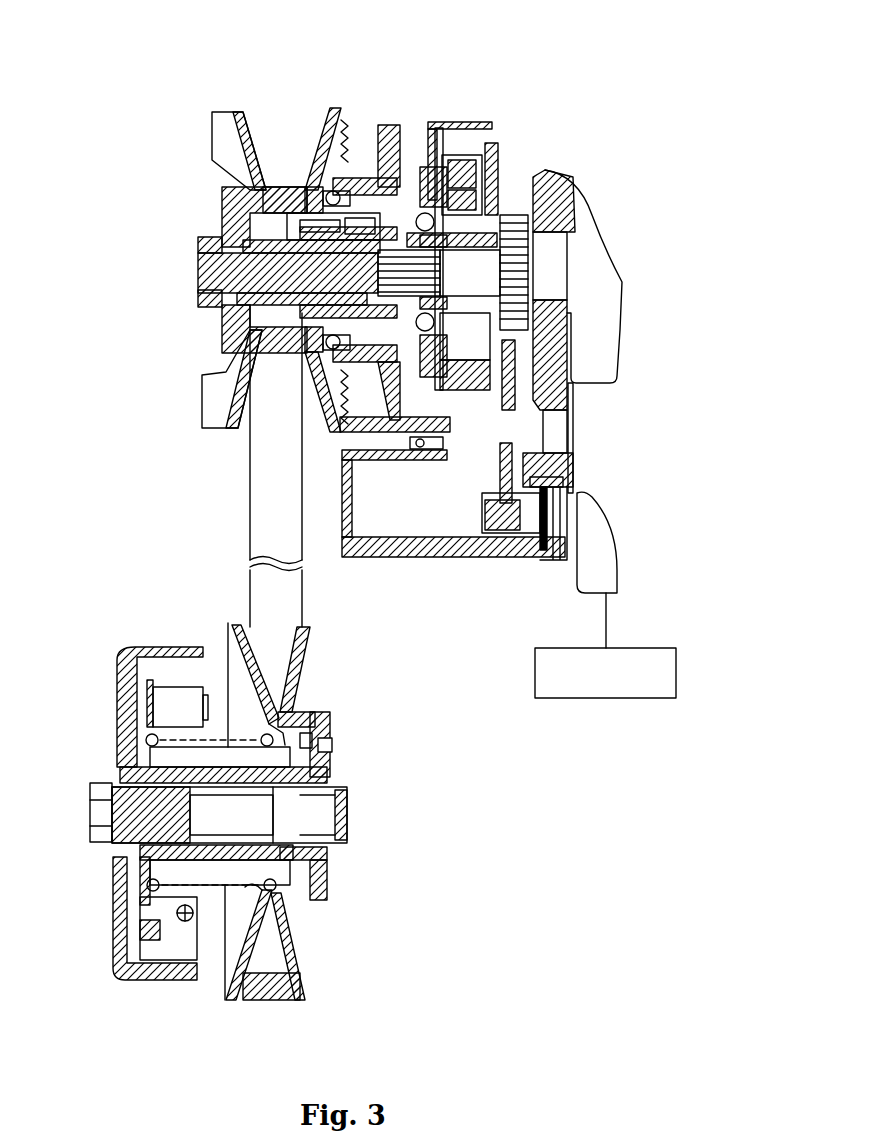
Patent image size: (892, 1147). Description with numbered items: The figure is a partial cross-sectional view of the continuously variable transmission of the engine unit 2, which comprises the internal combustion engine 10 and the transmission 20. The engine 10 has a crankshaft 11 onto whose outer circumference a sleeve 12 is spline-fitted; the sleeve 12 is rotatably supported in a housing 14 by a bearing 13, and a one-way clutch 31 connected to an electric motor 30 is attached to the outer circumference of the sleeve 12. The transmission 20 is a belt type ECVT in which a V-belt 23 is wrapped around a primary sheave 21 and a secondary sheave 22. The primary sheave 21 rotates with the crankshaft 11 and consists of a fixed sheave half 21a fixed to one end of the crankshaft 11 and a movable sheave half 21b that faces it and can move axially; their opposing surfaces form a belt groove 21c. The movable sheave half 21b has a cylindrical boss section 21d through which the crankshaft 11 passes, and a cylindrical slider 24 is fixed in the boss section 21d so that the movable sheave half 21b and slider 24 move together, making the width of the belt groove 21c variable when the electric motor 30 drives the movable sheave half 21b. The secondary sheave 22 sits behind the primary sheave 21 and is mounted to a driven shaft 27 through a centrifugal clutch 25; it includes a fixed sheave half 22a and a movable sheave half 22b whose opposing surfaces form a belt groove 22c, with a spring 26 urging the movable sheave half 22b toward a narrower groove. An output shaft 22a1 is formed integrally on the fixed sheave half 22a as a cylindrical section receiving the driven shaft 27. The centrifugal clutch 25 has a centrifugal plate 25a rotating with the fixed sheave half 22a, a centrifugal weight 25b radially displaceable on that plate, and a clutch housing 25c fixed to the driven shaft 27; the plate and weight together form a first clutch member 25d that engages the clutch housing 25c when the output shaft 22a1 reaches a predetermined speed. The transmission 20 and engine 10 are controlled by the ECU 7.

The engine unit 2 is at (528, 70).
The ECU 7 is at (575, 700).
The internal combustion engine 10 is at (628, 322).
The crankshaft 11 is at (592, 252).
The sleeve 12 is at (485, 252).
The bearing 13 is at (437, 128).
The housing 14 is at (355, 485).
The transmission 20 is at (132, 163).
The primary sheave 21 is at (220, 205).
The fixed sheave half 21a is at (232, 162).
The movable sheave half 21b is at (340, 128).
The belt groove 21c is at (260, 185).
The cylindrical boss section 21d is at (350, 178).
The secondary sheave 22 is at (289, 786).
The fixed sheave half 22a is at (303, 668).
The output shaft 22a1 is at (302, 752).
The movable sheave half 22b is at (232, 648).
The belt groove 22c is at (284, 657).
The V-belt 23 is at (302, 595).
The cylindrical slider 24 is at (298, 332).
The centrifugal clutch 25 is at (133, 789).
The centrifugal plate 25a is at (118, 885).
The centrifugal weight 25b is at (182, 687).
The clutch housing 25c is at (127, 677).
The first clutch member 25d is at (167, 680).
The spring 26 is at (322, 723).
The driven shaft 27 is at (332, 825).
The electric motor 30 is at (572, 527).
The one-way clutch 31 is at (466, 150).